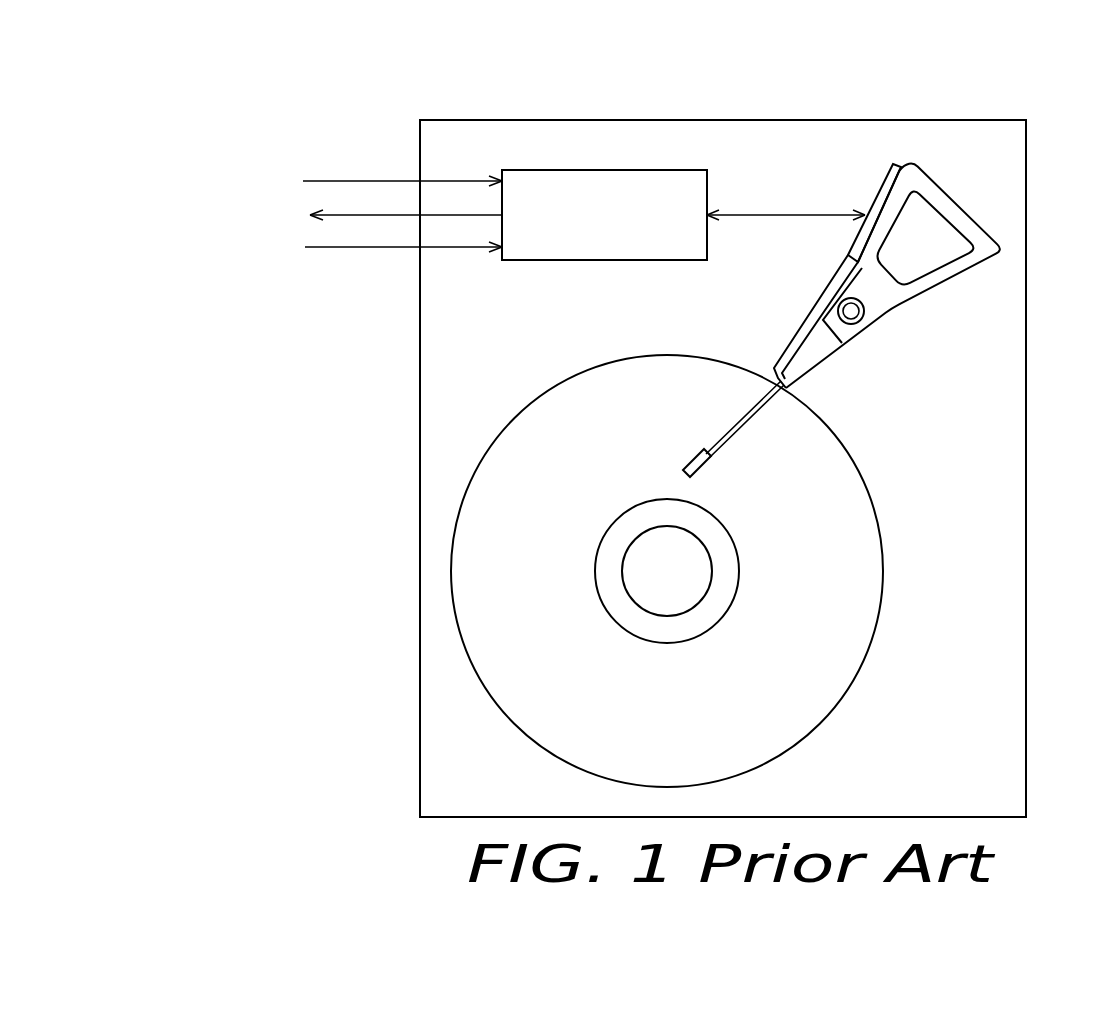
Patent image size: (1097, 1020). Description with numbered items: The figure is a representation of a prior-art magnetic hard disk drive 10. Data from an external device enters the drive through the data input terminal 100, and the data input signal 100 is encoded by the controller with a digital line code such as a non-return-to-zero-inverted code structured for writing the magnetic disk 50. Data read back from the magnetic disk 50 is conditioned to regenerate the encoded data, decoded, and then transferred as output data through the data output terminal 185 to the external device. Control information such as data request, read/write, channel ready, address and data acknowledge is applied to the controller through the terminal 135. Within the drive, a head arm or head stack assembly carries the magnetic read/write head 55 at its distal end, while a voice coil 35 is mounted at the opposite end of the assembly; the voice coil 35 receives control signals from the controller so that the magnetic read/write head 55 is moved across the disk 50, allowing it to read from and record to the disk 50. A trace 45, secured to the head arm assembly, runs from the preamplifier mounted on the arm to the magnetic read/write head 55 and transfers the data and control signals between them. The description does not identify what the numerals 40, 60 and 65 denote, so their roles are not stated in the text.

The magnetic hard disk drive 10 is at (996, 109).
The voice coil 35 is at (680, 170).
The actuator arm 40 is at (813, 367).
The trace 45 is at (880, 193).
The magnetic disk 50 is at (820, 307).
The magnetic read/write head 55 is at (713, 466).
The disk 60 is at (883, 583).
The actuator 65 is at (987, 228).
The data input terminal 100 is at (223, 163).
The data output terminal 185 is at (200, 210).
The control data terminal 135 is at (150, 263).